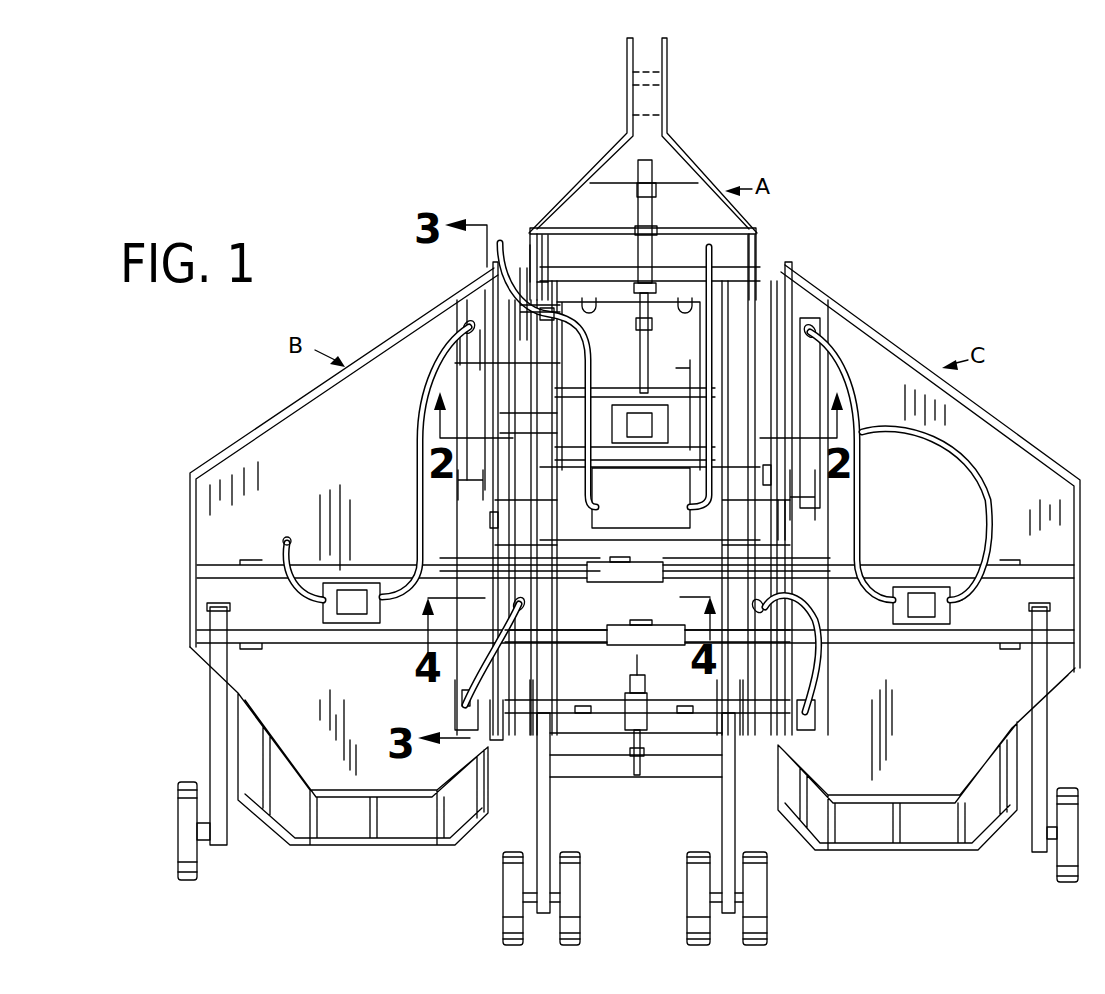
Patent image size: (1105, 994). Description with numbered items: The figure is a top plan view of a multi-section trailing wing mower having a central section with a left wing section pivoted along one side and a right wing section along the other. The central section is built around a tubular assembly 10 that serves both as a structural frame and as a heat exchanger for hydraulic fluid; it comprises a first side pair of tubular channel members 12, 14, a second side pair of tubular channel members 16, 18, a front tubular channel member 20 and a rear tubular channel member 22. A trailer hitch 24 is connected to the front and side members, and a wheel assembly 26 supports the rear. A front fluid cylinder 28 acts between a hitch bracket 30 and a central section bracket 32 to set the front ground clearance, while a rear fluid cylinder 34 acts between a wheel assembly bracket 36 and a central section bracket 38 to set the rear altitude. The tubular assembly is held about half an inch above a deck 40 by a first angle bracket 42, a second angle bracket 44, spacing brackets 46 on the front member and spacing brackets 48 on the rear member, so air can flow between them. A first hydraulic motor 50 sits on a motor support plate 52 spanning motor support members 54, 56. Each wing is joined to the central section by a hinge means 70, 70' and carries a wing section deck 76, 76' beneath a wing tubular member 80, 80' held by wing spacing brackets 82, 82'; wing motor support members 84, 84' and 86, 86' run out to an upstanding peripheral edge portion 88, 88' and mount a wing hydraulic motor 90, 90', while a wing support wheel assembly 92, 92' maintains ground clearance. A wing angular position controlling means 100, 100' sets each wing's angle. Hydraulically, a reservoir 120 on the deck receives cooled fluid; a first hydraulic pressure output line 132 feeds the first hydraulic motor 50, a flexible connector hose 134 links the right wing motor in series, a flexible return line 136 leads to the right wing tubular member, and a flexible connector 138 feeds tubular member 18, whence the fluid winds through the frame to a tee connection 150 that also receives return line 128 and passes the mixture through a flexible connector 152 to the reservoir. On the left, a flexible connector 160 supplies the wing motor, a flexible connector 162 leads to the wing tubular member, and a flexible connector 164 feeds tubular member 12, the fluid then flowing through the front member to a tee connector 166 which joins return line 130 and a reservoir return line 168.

The tubular assembly 10 is at (585, 268).
The tubular channel member 12 is at (540, 390).
The tubular channel member 14 is at (485, 370).
The tubular channel member 16 is at (758, 325).
The tubular channel member 18 is at (788, 378).
The front tubular channel member 20 is at (785, 248).
The rear tubular channel member 22 is at (672, 722).
The trailer hitch 24 is at (588, 176).
The wheel assembly 26 is at (688, 875).
The fluid cylinder 28 is at (644, 234).
The hitch bracket 30 is at (655, 168).
The central section bracket 32 is at (640, 328).
The fluid cylinder 34 is at (630, 708).
The wheel assembly bracket 36 is at (637, 760).
The central section bracket 38 is at (630, 680).
The deck 40 is at (650, 545).
The first angle bracket 42 is at (492, 520).
The second angle bracket 44 is at (765, 485).
The spacing brackets 46 is at (692, 280).
The spacing brackets 48 is at (686, 706).
The first hydraulic motor 50 is at (650, 437).
The motor support plate 52 is at (614, 443).
The motor support member 54 is at (608, 388).
The motor support member 56 is at (686, 380).
The hinge means 70 is at (507, 743).
The hinge means 70' is at (851, 521).
The wing section deck 76 is at (402, 430).
The wing section deck 76' is at (918, 453).
The wing tubular member 80 is at (418, 485).
The wing tubular member 80' is at (855, 493).
The wing spacing brackets 82 is at (475, 491).
The wing spacing brackets 82' is at (832, 524).
The wing motor support member 84 is at (398, 543).
The wing motor support member 84' is at (868, 552).
The wing motor support member 86 is at (402, 654).
The wing motor support member 86' is at (879, 654).
The upstanding peripheral edge portion 88 is at (344, 457).
The upstanding peripheral edge portion 88' is at (930, 468).
The wing hydraulic motor 90 is at (350, 630).
The wing hydraulic motor 90' is at (921, 632).
The wing support wheel assembly 92 is at (186, 741).
The wing support wheel assembly 92' is at (1064, 742).
The wing angular position controlling means 100 is at (647, 614).
The wing angular position controlling means 100' is at (614, 597).
The reservoir 120 is at (662, 519).
The return line 128 is at (477, 265).
The return line 130 is at (742, 237).
The first hydraulic pressure output line 132 is at (538, 235).
The flexible connector hose 134 is at (955, 452).
The flexible return line 136 is at (862, 548).
The flexible connector 138 is at (825, 655).
The tee connection 150 is at (530, 303).
The flexible connector 152 is at (478, 330).
The flexible connector 160 is at (290, 545).
The flexible connector 162 is at (416, 460).
The flexible connector 164 is at (455, 700).
The tee connector 166 is at (735, 292).
The reservoir return line 168 is at (802, 332).